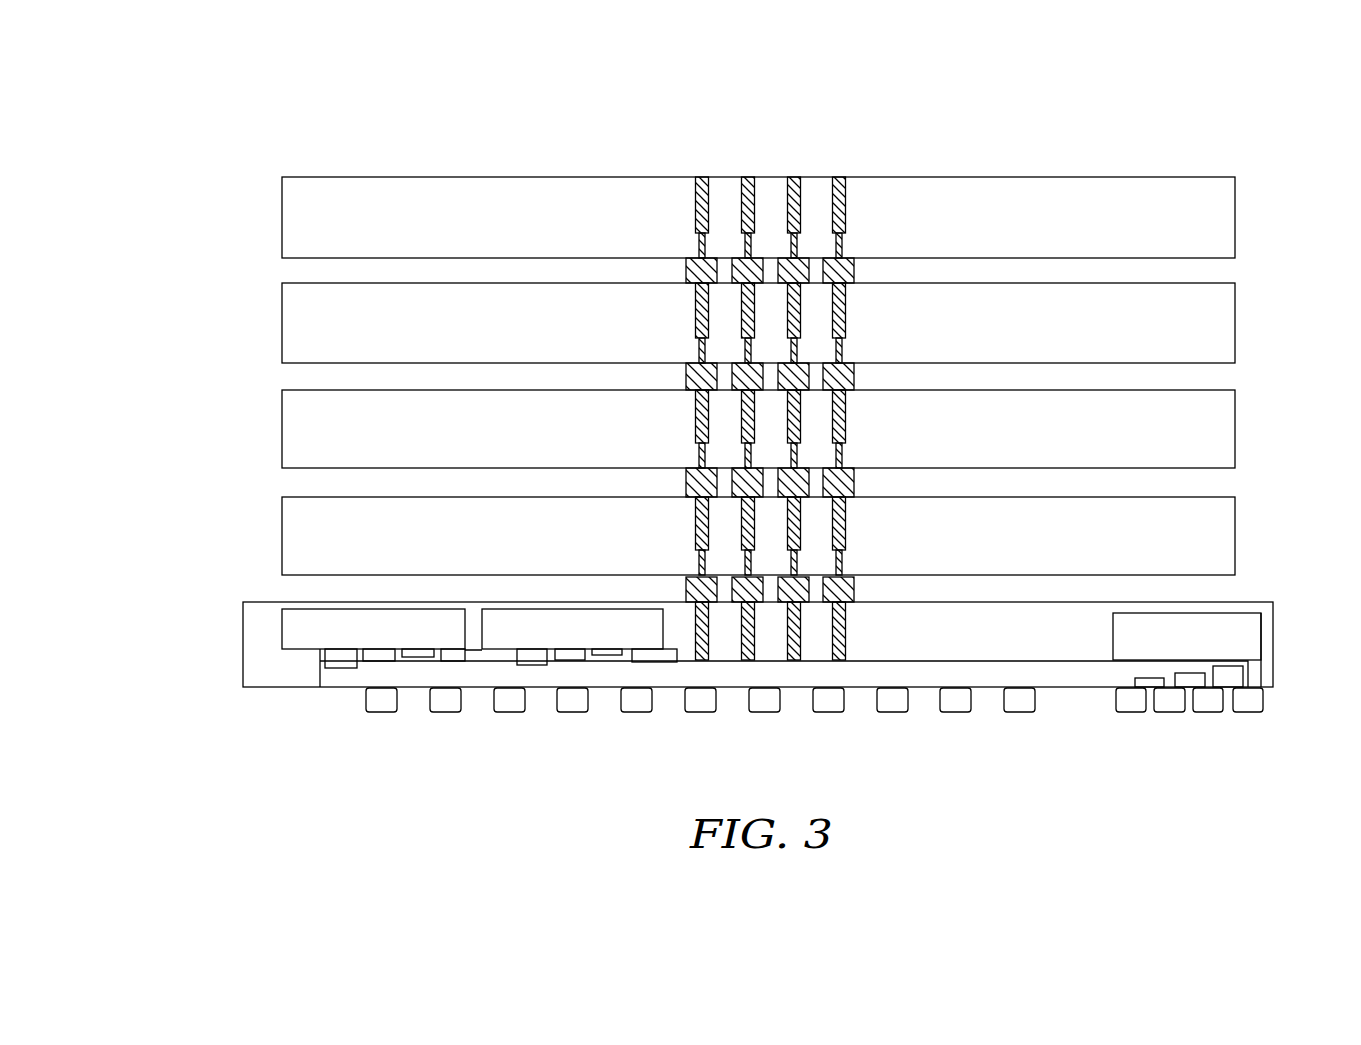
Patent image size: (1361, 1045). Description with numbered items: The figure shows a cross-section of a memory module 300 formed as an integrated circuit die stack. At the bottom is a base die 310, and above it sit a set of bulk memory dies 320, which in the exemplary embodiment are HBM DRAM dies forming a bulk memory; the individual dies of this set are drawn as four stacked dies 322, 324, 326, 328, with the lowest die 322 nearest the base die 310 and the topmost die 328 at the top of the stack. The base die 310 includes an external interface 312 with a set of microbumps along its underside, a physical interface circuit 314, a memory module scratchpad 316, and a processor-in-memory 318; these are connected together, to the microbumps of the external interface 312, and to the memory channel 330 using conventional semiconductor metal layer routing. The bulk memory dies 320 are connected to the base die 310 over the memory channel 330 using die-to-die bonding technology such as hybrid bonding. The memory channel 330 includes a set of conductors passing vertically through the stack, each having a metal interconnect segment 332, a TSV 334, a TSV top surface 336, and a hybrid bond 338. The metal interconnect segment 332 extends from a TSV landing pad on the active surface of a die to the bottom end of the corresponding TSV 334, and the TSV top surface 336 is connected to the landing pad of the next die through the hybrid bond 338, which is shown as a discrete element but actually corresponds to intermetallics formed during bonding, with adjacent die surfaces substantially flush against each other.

The memory module 300 is at (208, 65).
The base die 310 is at (243, 655).
The external interface 312 is at (1273, 697).
The physical interface circuit (PHY) 314 is at (1261, 638).
The memory module scratchpad (MMS) 316 is at (517, 609).
The processor-in-memory (PIM) 318 is at (282, 620).
The bulk memory dies 320 is at (272, 180).
The die 322 is at (1235, 528).
The die 324 is at (1235, 420).
The die 326 is at (1235, 315).
The die 328 is at (1235, 218).
The memory channel 330 is at (680, 97).
The metal interconnect segment 332 is at (700, 250).
The TSV 334 is at (697, 228).
The TSV top surface 336 is at (705, 185).
The hybrid bond 338 is at (688, 270).